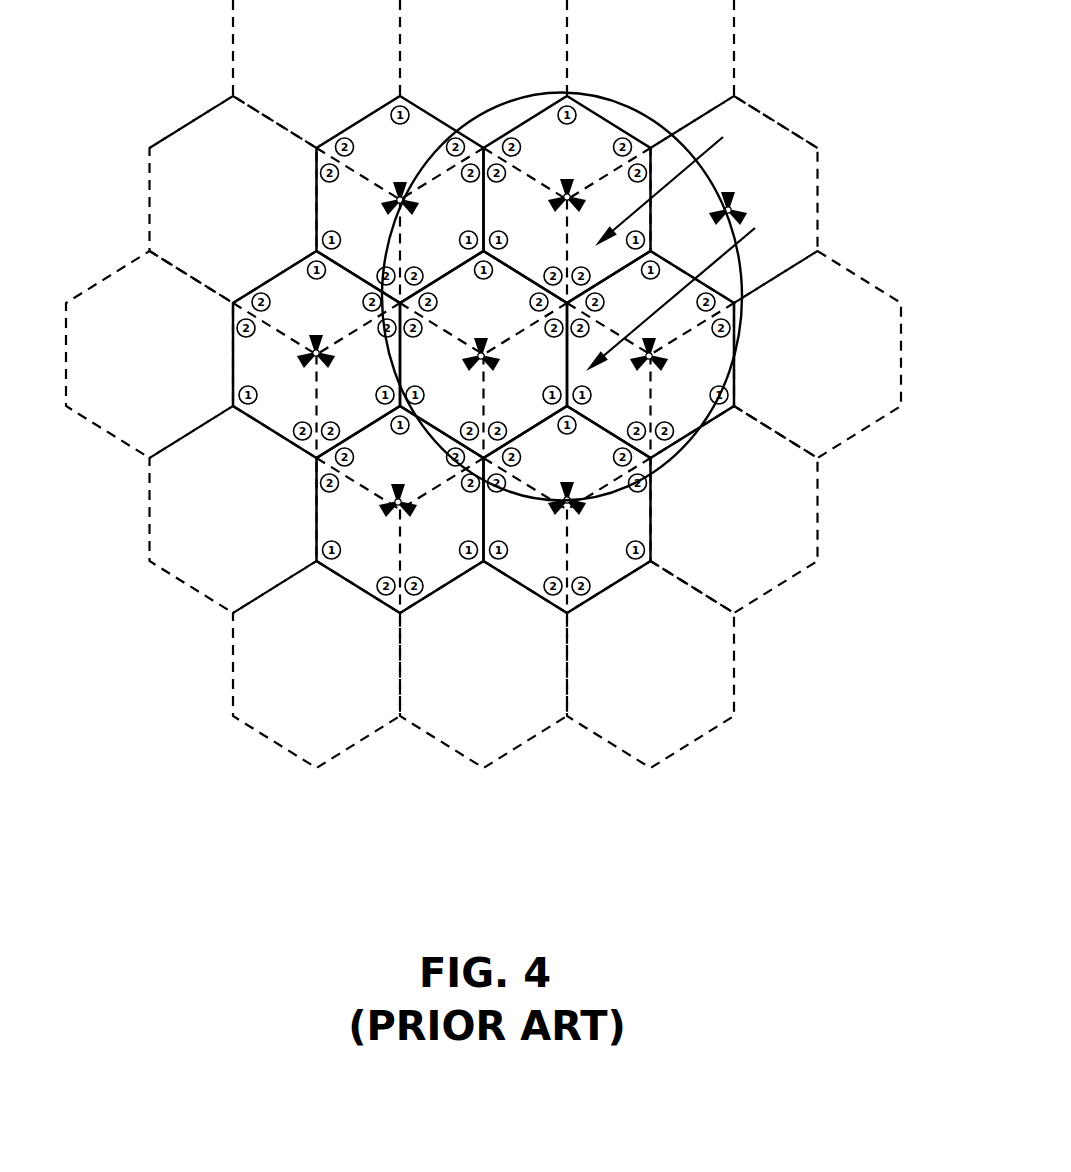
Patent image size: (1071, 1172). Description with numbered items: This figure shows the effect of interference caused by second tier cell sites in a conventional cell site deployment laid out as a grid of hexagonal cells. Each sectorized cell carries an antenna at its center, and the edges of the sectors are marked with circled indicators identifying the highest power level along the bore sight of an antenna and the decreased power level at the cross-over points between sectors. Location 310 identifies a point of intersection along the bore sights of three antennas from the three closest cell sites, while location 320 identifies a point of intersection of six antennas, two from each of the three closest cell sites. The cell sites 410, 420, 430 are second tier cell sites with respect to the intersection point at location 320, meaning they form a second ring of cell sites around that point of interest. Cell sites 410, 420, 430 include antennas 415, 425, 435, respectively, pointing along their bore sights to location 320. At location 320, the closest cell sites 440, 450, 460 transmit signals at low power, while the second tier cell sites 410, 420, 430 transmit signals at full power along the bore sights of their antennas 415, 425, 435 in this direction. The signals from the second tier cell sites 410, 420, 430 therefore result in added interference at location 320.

The location 310 is at (693, 285).
The location 320 is at (677, 178).
The cell site 410 is at (816, 146).
The antenna 415 is at (721, 215).
The cell site 420 is at (653, 518).
The antenna 425 is at (568, 491).
The cell site 430 is at (407, 100).
The antenna 435 is at (419, 207).
The cell site 440 is at (615, 112).
The cell site 450 is at (739, 337).
The cell site 460 is at (429, 437).